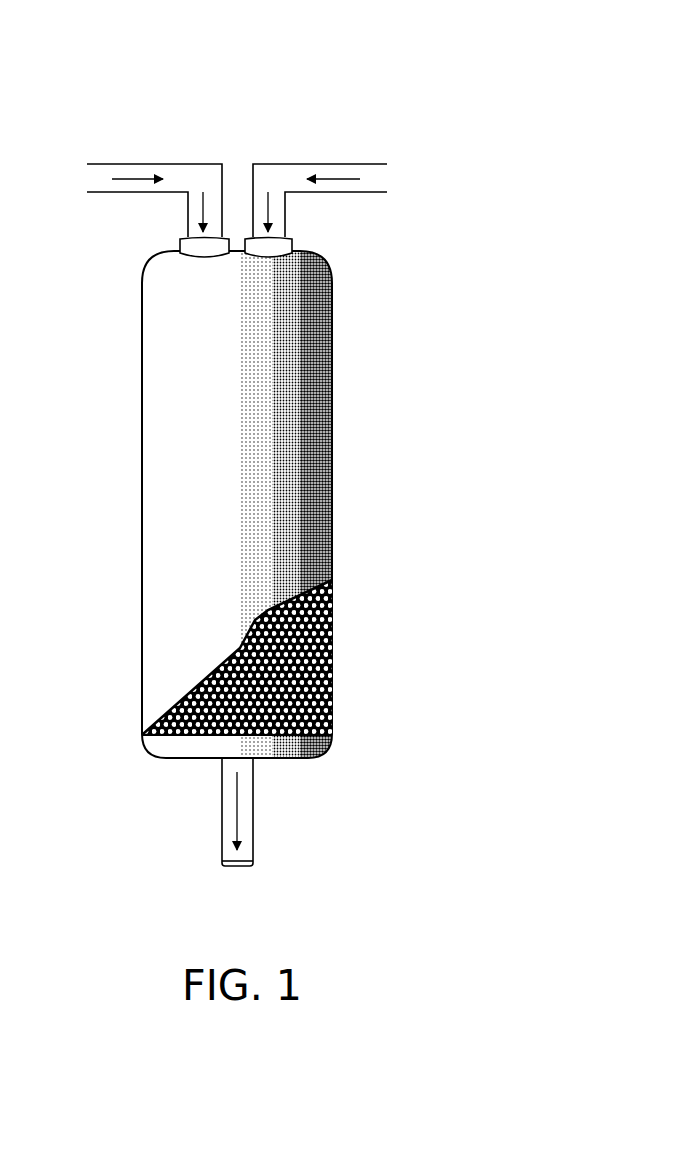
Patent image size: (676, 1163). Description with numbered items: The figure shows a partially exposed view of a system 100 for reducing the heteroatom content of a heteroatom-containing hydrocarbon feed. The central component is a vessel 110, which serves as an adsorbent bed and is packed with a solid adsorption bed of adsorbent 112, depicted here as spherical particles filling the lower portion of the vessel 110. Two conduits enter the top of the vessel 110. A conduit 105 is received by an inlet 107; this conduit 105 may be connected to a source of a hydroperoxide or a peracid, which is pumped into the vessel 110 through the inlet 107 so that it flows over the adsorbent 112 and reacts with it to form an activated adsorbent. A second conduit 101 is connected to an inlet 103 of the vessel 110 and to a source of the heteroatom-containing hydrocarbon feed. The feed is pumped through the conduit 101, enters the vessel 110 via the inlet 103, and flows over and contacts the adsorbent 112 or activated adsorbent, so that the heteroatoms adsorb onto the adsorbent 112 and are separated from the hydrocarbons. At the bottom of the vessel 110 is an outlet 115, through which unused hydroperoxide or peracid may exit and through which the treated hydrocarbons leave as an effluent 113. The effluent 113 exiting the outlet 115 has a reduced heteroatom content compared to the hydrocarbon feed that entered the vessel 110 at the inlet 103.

The system 100 is at (340, 73).
The conduit 101 is at (94, 164).
The inlet 103 is at (180, 241).
The conduit 105 is at (364, 164).
The inlet 107 is at (292, 241).
The vessel 110 is at (142, 440).
The adsorbent 112 is at (332, 645).
The effluent 113 is at (247, 820).
The outlet 115 is at (240, 867).